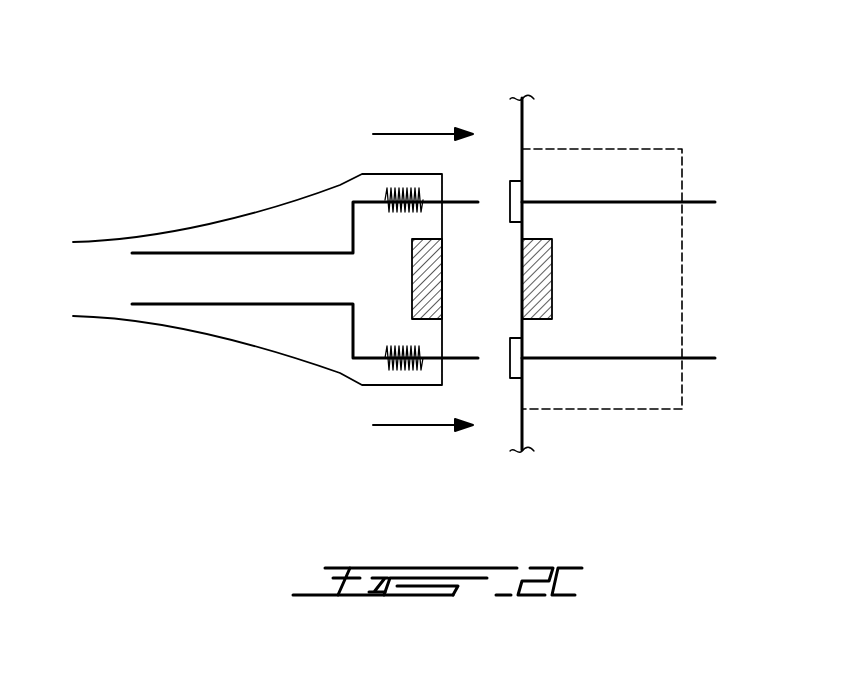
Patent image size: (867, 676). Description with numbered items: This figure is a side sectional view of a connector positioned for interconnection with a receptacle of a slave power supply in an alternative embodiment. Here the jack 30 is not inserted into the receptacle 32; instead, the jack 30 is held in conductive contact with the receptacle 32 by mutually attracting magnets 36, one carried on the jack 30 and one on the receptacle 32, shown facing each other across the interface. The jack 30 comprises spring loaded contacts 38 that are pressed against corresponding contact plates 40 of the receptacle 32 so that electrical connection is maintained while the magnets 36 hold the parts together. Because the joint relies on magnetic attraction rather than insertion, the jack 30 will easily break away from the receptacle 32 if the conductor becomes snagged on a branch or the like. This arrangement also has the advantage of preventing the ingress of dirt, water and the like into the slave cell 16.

The slave cell 16 is at (522, 430).
The jack 30 is at (237, 222).
The receptacle 32 is at (628, 149).
The magnet 36 is at (412, 277).
The spring loaded contact 38 is at (465, 202).
The contact plate 40 is at (522, 163).